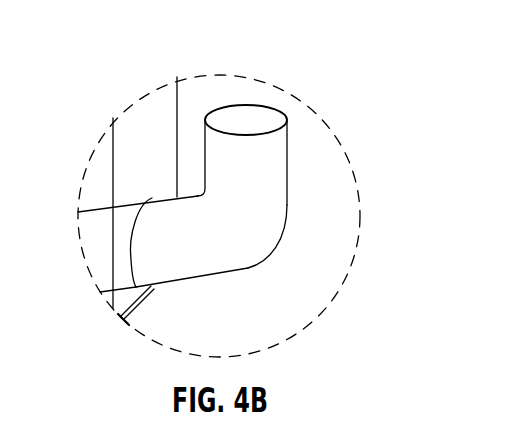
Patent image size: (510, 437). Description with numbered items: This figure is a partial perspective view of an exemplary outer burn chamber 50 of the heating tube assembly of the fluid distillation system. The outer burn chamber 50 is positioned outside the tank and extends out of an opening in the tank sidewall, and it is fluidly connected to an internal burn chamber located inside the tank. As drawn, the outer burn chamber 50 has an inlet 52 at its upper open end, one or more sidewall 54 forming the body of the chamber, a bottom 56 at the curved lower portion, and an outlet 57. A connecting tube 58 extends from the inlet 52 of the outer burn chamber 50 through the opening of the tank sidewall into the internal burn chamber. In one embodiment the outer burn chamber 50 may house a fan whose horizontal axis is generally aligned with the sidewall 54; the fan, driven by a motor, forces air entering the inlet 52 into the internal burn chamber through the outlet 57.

The outer burn chamber 50 is at (369, 49).
The inlet 52 is at (257, 105).
The sidewall 54 is at (270, 170).
The bottom 56 is at (250, 243).
The outlet 57 is at (195, 268).
The connecting tube 58 is at (155, 268).